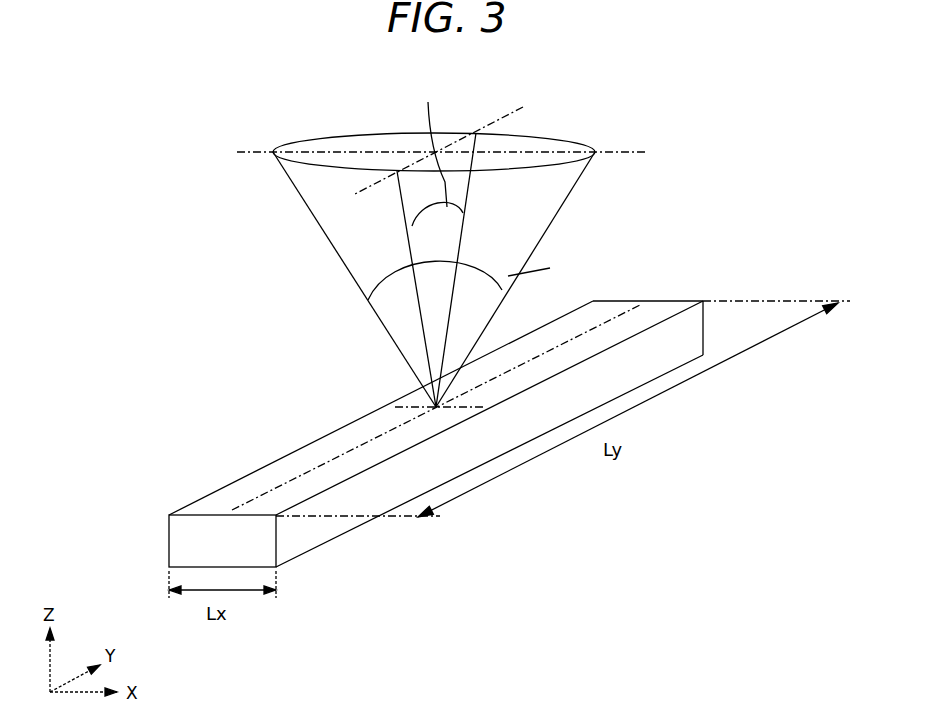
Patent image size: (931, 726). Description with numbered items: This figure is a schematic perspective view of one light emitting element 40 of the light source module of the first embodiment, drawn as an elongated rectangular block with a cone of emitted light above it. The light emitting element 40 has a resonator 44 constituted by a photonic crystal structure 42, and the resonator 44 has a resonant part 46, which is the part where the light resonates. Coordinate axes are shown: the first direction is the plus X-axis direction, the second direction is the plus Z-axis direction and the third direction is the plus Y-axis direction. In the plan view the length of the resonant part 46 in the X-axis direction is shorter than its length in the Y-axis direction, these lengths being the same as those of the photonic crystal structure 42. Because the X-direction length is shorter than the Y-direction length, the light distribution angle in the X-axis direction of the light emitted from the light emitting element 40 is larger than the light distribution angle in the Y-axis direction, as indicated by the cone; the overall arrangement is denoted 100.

The light beam from light source 100 is at (776, 192).
The light emitting element 40 is at (492, 402).
The photonic crystal structure 42 is at (293, 535).
The resonator 44 is at (172, 480).
The resonant part 46 is at (222, 454).